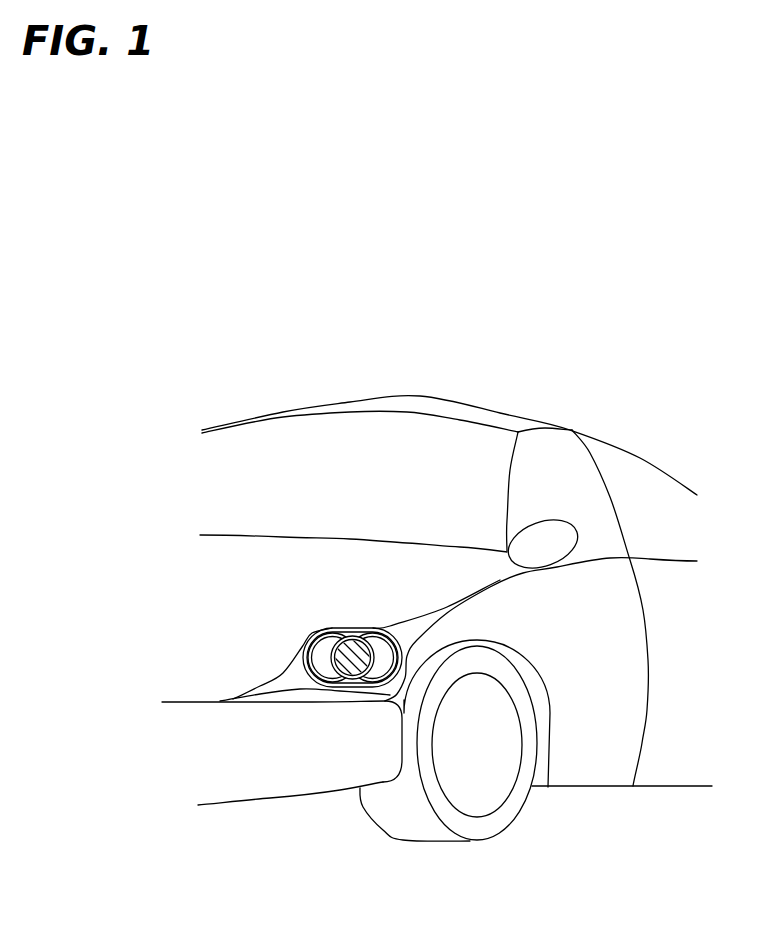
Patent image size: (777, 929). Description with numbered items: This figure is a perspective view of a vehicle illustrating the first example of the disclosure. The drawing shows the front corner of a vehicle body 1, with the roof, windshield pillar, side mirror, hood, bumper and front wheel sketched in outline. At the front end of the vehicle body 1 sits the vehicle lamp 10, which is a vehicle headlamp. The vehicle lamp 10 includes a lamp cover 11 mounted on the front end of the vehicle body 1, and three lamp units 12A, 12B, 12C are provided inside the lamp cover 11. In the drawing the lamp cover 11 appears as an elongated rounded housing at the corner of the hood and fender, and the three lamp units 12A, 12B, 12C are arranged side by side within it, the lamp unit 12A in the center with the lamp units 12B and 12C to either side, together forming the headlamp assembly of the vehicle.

The vehicle body 1 is at (422, 397).
The vehicle lamp 10 is at (307, 677).
The lamp cover 11 is at (362, 683).
The lamp unit 12A is at (357, 632).
The lamp unit 12B is at (318, 630).
The lamp unit 12C is at (387, 632).